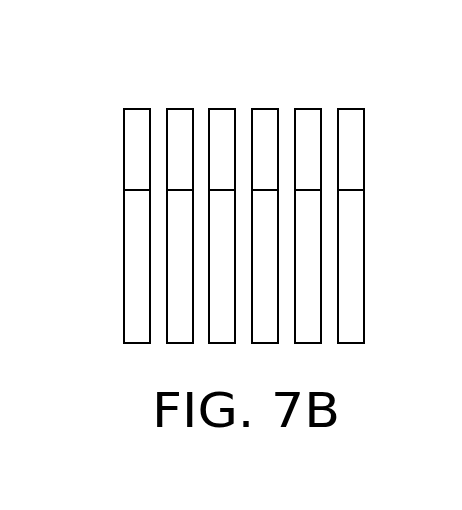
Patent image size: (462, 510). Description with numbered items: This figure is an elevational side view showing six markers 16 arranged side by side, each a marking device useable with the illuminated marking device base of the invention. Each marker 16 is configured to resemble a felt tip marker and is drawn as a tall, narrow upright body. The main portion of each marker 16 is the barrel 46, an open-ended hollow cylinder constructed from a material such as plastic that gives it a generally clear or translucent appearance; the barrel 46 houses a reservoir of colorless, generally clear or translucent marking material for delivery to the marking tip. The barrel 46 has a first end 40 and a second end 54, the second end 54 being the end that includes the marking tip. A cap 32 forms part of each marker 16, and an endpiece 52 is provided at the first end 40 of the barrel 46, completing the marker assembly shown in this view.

The marker 16 is at (137, 114).
The cap 32 is at (358, 155).
The barrel 46 is at (364, 268).
The second end 54 is at (124, 189).
The first end 40 is at (124, 334).
The endpiece 52 is at (138, 344).